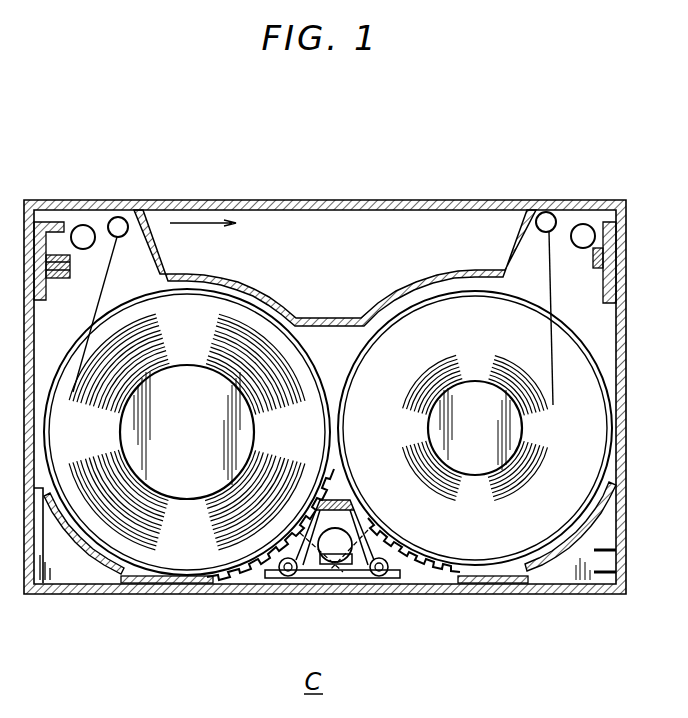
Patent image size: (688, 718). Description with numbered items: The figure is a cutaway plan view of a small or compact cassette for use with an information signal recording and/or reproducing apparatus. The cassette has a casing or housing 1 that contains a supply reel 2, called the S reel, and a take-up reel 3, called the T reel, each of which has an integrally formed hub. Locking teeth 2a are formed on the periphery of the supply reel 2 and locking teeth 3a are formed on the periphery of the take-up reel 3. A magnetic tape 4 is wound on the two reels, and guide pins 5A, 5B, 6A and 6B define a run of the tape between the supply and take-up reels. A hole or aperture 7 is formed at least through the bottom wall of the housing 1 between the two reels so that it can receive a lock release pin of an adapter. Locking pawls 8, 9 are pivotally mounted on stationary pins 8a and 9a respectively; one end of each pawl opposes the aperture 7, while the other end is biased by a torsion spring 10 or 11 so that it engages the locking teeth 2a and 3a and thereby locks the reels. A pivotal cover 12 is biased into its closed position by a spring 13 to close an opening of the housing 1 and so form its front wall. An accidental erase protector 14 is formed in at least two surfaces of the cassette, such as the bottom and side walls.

The casing or housing 1 is at (82, 594).
The supply reel 2 is at (148, 567).
The locking teeth 2a is at (183, 594).
The take-up reel 3 is at (505, 568).
The locking teeth 3a is at (460, 590).
The magnetic tape 4 is at (548, 290).
The guide pin 5A is at (84, 225).
The guide pin 5B is at (584, 224).
The guide pin 6A is at (120, 217).
The guide pin 6B is at (546, 212).
The hole or aperture 7 is at (326, 562).
The locking pawl 8 is at (302, 582).
The stationary pin 8a is at (268, 590).
The locking pawl 9 is at (362, 582).
The stationary pin 9a is at (382, 586).
The torsion spring 10 is at (352, 504).
The torsion spring 11 is at (378, 532).
The pivotal cover 12 is at (272, 200).
The spring 13 is at (60, 252).
The accidental erase protector 14 is at (607, 594).